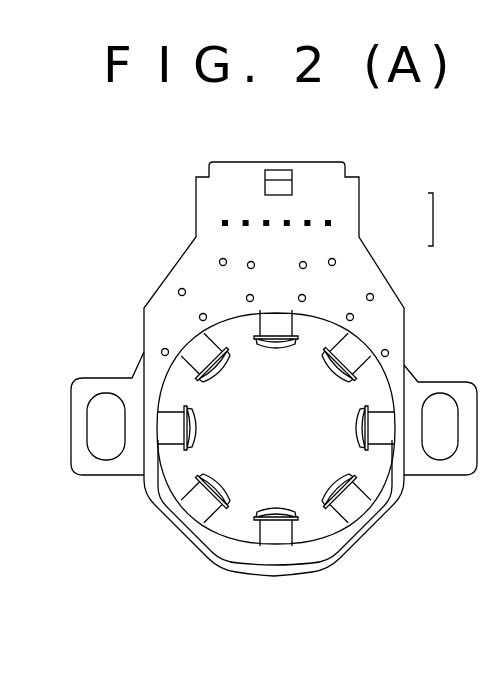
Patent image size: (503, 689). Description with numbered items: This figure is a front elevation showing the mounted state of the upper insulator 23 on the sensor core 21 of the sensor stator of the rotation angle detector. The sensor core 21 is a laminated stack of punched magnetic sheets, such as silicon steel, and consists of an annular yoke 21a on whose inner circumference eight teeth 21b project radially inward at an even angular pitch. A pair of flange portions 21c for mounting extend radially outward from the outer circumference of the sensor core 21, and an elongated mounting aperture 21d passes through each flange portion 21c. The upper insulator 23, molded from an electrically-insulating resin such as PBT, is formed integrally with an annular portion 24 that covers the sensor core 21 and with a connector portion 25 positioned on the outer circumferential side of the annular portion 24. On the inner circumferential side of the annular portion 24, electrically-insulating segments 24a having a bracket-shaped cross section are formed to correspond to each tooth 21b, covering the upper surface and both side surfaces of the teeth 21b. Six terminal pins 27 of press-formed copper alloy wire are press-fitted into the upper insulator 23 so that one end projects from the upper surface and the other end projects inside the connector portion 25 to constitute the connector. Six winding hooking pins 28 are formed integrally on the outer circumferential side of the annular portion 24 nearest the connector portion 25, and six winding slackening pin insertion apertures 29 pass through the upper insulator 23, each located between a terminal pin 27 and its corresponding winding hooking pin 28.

The sensor core 21 is at (126, 482).
The annular yoke 21a is at (161, 516).
The teeth 21b is at (336, 476).
The flange portions 21c is at (442, 382).
The mounting apertures 21d is at (438, 452).
The upper insulator 23 is at (448, 219).
The annular portion 24 is at (340, 298).
The electrically-insulating segments 24a is at (352, 352).
The connector portion 25 is at (368, 205).
The terminal pins 27 is at (222, 216).
The winding hooking pins 28 is at (161, 349).
The winding slackening pin insertion apertures 29 is at (179, 289).